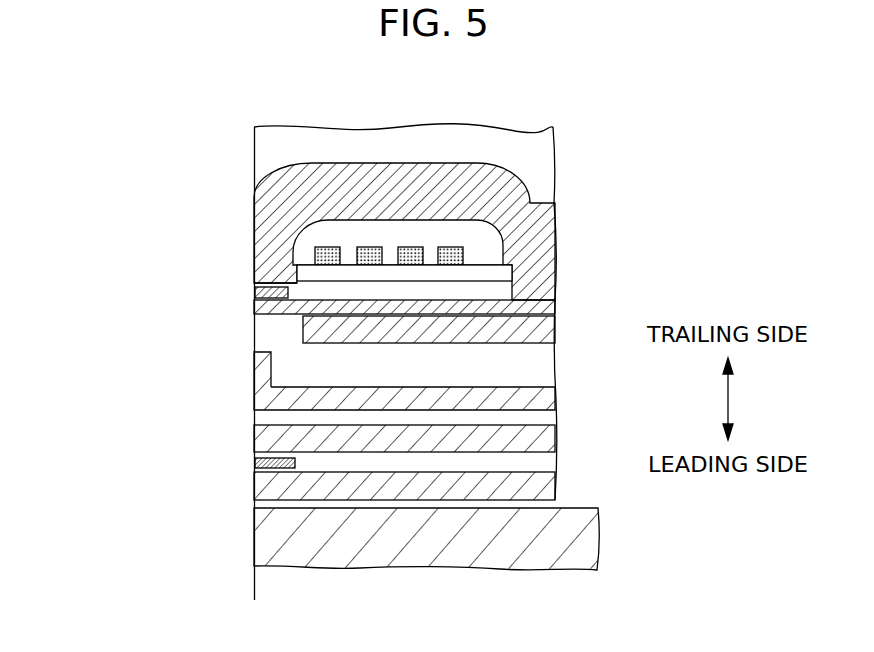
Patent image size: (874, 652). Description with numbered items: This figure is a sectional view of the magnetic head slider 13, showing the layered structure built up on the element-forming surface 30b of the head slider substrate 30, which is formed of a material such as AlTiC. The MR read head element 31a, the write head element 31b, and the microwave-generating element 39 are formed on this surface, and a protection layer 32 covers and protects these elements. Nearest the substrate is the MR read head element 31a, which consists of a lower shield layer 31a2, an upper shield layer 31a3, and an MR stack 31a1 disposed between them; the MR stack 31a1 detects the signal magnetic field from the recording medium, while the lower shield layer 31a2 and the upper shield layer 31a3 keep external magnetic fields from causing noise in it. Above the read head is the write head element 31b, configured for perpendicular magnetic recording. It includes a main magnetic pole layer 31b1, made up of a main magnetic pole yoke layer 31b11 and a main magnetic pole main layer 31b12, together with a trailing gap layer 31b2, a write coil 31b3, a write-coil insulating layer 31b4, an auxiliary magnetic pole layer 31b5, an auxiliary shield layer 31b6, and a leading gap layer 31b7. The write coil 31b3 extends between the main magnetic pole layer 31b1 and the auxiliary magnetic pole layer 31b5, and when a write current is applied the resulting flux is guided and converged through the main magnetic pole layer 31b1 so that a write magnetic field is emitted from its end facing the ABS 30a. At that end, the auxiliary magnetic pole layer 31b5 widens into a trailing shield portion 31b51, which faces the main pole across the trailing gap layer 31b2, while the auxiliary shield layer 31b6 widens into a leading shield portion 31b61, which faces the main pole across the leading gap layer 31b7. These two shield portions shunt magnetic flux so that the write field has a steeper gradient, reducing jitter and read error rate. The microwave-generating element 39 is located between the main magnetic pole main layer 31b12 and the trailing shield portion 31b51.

The liquid ejection head 13 is at (562, 100).
The protection layer 32 is at (473, 137).
The microwave-generating element 39 is at (312, 293).
The head slider substrate 30 is at (583, 560).
The ABS 30a is at (253, 548).
The element-forming surface 30b is at (334, 507).
The MR read head element 31a is at (149, 417).
The MR stack 31a1 is at (256, 463).
The lower shield layer 31a2 is at (256, 490).
The upper shield layer 31a3 is at (256, 437).
The write head element 31b is at (68, 143).
The main magnetic pole layer 31b1 is at (151, 330).
The main magnetic pole yoke layer 31b11 is at (303, 333).
The main magnetic pole main layer 31b12 is at (288, 296).
The trailing gap layer 31b2 is at (315, 278).
The write coil 31b3 is at (360, 247).
The write-coil insulating layer 31b4 is at (372, 230).
The auxiliary magnetic pole layer 31b5 is at (317, 240).
The trailing shield portion 31b51 is at (285, 222).
The auxiliary shield layer 31b6 is at (260, 402).
The leading shield portion 31b61 is at (257, 372).
The leading gap layer 31b7 is at (270, 344).